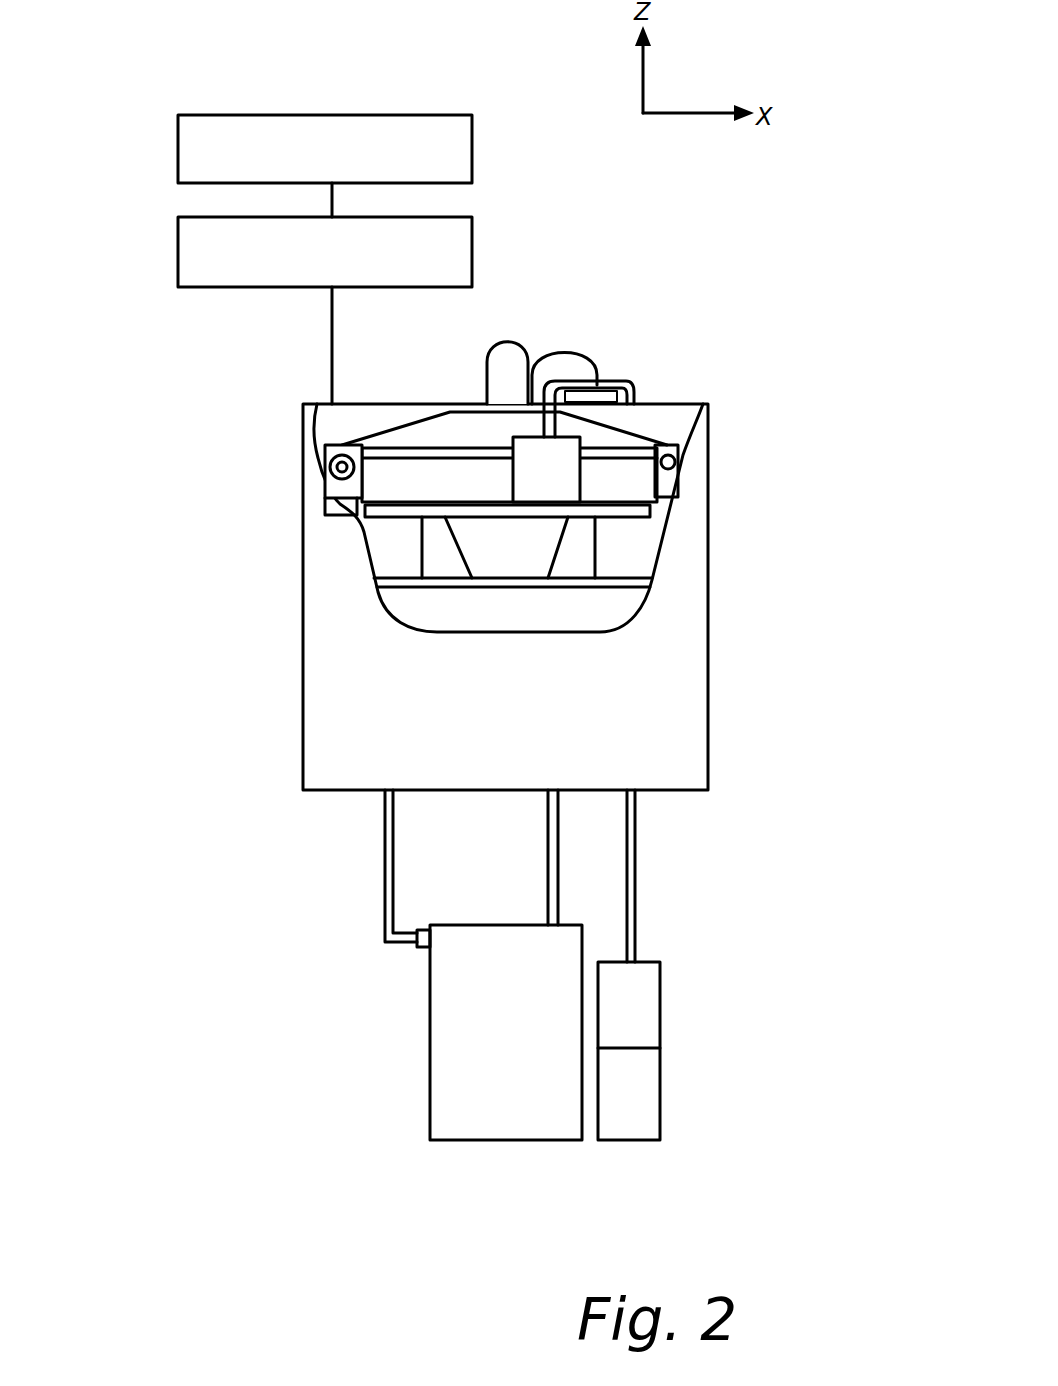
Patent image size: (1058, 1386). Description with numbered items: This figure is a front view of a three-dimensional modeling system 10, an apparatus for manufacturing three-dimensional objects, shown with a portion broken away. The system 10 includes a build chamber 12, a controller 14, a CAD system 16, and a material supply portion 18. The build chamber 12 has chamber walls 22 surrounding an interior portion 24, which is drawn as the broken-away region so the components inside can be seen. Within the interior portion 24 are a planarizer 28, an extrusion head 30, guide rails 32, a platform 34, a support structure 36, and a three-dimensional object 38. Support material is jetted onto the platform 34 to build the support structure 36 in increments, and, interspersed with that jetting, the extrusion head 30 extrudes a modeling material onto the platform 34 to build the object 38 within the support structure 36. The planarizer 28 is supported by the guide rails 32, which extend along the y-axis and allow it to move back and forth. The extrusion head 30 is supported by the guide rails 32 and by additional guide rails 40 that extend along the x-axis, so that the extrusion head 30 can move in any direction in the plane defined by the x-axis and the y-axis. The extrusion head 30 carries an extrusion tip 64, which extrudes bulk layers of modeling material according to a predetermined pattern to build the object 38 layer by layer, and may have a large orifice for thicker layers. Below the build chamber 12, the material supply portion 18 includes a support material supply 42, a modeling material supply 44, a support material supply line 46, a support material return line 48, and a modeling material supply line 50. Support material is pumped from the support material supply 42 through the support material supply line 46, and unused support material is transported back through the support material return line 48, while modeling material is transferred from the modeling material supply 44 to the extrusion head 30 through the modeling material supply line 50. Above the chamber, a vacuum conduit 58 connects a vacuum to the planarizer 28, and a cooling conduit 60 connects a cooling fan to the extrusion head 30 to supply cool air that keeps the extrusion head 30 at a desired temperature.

The three-dimensional modeling system 10 is at (150, 690).
The build chamber 12 is at (774, 551).
The controller 14 is at (472, 243).
The CAD system 16 is at (472, 145).
The material supply portion 18 is at (388, 1053).
The chamber walls 22 is at (687, 758).
The interior portion 24 is at (438, 622).
The planarizer 28 is at (645, 517).
The extrusion head 30 is at (553, 470).
The guide rails 32 is at (342, 455).
The platform 34 is at (512, 588).
The support structure 36 is at (422, 538).
The three-dimensional object 38 is at (493, 558).
The additional guide rails 40 is at (447, 455).
The support material supply 42 is at (457, 1108).
The modeling material supply 44 is at (628, 997).
The support material supply line 46 is at (548, 860).
The support material return line 48 is at (385, 913).
The modeling material supply line 50 is at (640, 397).
The vacuum conduit 58 is at (510, 342).
The cooling conduit 60 is at (568, 363).
The extrusion tip 64 is at (545, 505).